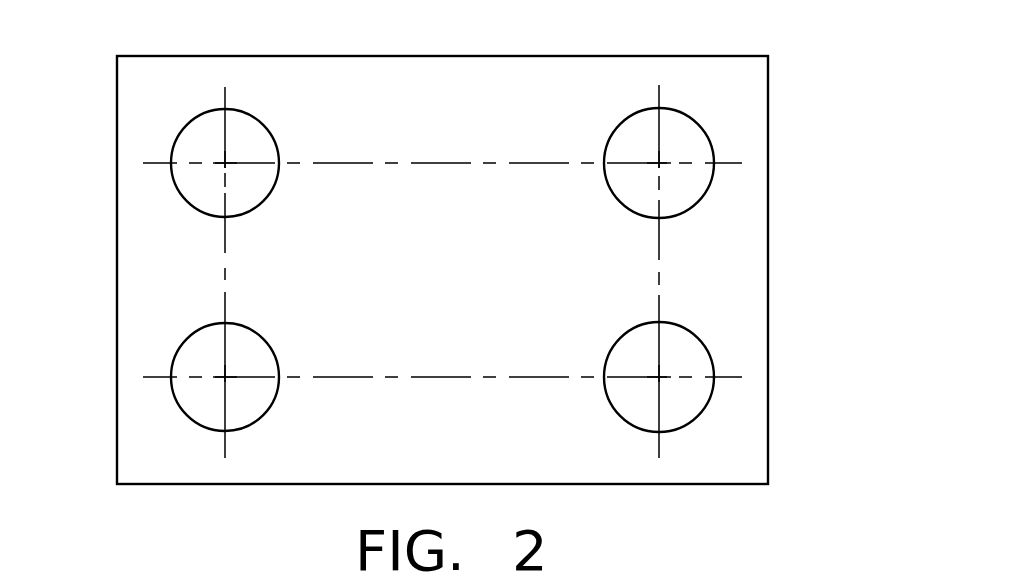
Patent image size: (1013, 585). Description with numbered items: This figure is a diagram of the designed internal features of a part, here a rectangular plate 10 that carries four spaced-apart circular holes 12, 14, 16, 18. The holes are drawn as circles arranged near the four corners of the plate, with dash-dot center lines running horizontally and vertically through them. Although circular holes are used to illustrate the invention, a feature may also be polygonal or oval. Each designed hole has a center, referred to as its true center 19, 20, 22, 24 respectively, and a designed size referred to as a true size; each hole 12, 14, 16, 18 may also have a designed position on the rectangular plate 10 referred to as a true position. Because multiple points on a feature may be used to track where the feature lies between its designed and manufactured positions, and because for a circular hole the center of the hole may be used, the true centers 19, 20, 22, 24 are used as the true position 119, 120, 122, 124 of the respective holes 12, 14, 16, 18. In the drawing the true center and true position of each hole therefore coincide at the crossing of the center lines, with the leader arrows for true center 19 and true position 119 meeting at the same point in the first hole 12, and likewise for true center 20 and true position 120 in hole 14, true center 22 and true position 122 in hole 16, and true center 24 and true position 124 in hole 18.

The rectangular plate 10 is at (522, 85).
The circular hole 12 is at (187, 147).
The circular hole 14 is at (693, 143).
The circular hole 16 is at (700, 360).
The circular hole 18 is at (187, 360).
The true center 19 is at (225, 163).
The true position 119 is at (225, 163).
The true center 20 is at (659, 163).
The true position 120 is at (663, 167).
The true position 122 is at (661, 375).
The true center 22 is at (663, 381).
The true position 124 is at (224, 376).
The true center 24 is at (224, 378).